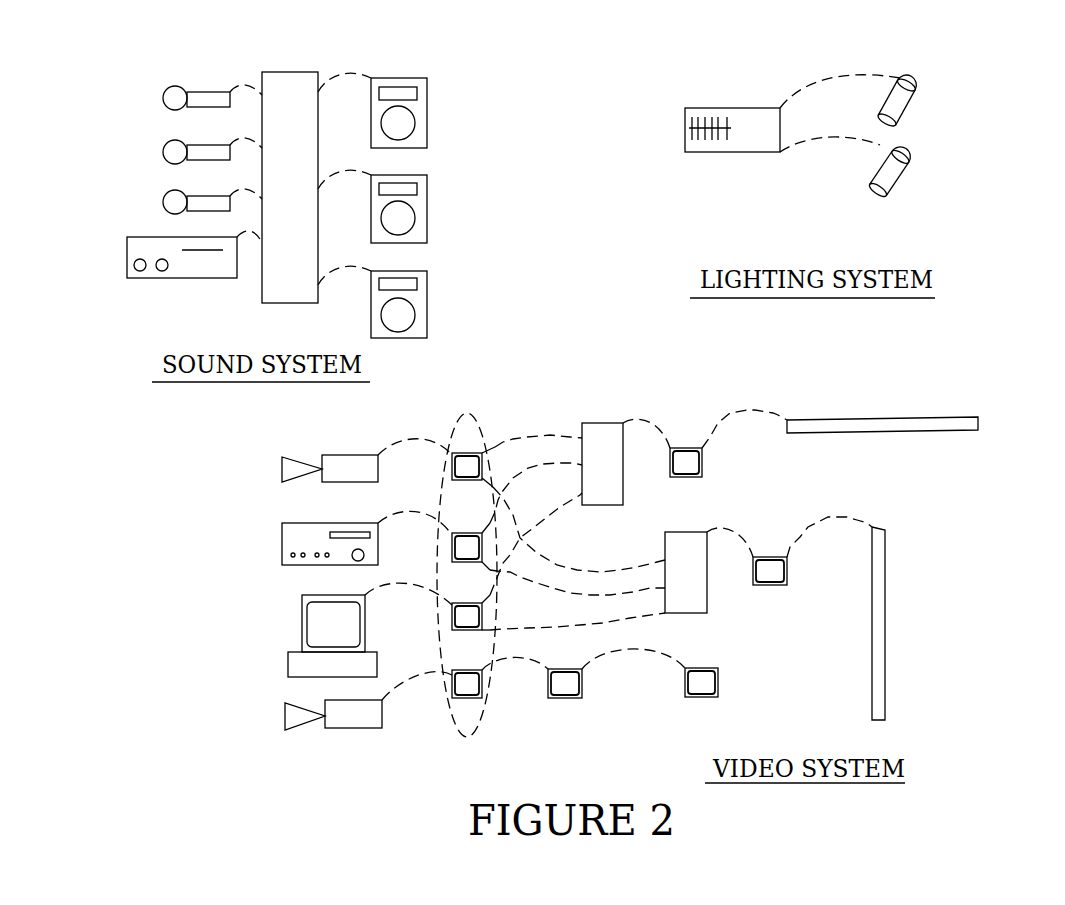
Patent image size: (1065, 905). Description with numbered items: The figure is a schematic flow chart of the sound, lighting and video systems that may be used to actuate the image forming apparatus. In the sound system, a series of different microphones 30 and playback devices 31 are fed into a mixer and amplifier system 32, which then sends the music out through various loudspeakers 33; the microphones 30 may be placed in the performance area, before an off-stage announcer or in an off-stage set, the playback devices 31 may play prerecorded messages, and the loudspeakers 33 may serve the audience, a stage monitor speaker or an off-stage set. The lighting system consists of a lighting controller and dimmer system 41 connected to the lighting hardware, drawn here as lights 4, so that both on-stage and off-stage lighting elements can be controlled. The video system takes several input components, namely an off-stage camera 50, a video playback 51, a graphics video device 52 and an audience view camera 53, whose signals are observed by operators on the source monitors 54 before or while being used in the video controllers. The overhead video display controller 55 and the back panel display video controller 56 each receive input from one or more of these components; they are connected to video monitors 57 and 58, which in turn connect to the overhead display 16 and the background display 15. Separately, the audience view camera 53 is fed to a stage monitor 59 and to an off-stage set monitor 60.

The microphones 30 is at (164, 202).
The playback devices 31 is at (152, 235).
The mixer and amplifier system 32 is at (262, 298).
The loudspeakers 33 is at (430, 308).
The lights 4 is at (907, 175).
The lighting controller and dimmer system 41 is at (707, 153).
The off-stage camera 50 is at (282, 465).
The video playback 51 is at (280, 543).
The graphics video device 52 is at (300, 615).
The audience view camera 53 is at (285, 713).
The source monitors 54 is at (482, 723).
The overhead video display controller 55 is at (592, 418).
The back panel display video controller 56 is at (692, 619).
The video monitor 57 is at (707, 460).
The video monitor 58 is at (767, 588).
The stage monitor 59 is at (567, 699).
The off-stage set monitor 60 is at (703, 697).
The background display 15 is at (888, 528).
The overhead display 16 is at (850, 415).